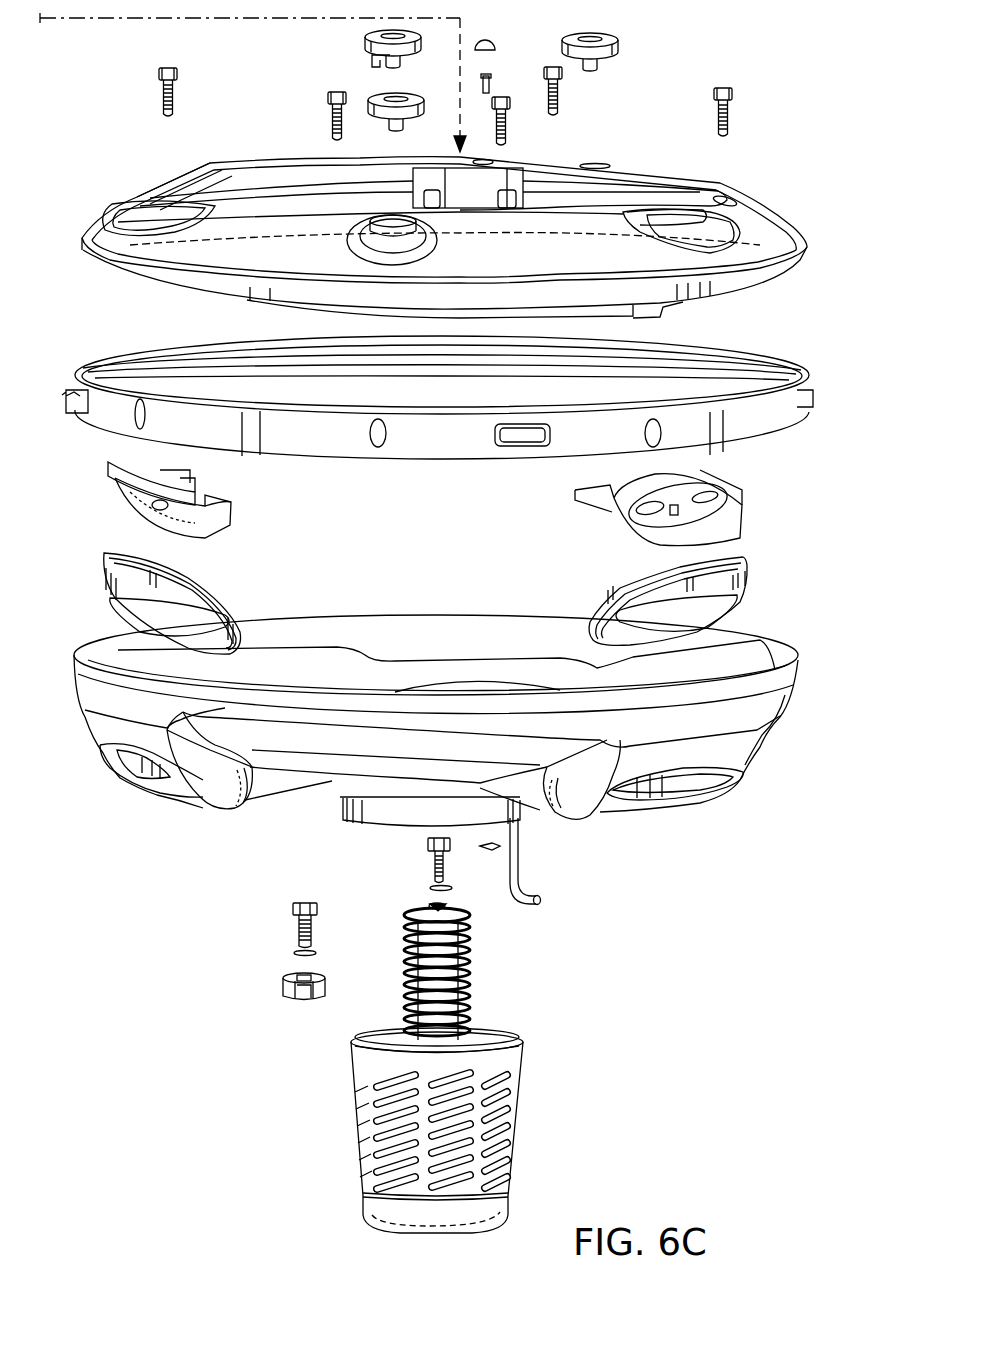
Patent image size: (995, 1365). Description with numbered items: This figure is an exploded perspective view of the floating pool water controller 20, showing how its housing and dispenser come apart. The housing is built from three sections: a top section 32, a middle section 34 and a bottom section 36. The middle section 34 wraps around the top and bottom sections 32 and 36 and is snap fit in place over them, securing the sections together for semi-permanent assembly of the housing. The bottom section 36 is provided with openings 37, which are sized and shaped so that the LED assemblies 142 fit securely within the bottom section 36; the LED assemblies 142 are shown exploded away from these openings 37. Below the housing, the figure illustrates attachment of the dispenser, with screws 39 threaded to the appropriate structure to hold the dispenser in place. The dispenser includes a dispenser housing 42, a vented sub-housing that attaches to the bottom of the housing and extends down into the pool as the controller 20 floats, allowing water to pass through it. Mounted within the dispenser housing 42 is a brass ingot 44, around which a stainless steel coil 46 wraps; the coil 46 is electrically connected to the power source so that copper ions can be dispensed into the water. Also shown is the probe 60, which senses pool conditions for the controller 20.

The floating pool water controller 20 is at (203, 880).
The top section 32 is at (790, 268).
The middle section 34 is at (813, 392).
The LED assemblies 142 is at (723, 488).
The bottom section 36 is at (792, 679).
The openings 37 is at (722, 791).
The screws 39 is at (427, 843).
The probe 60 is at (520, 870).
The brass ingot 44 is at (455, 936).
The stainless steel coil 46 is at (460, 983).
The dispenser housing 42 is at (512, 1061).